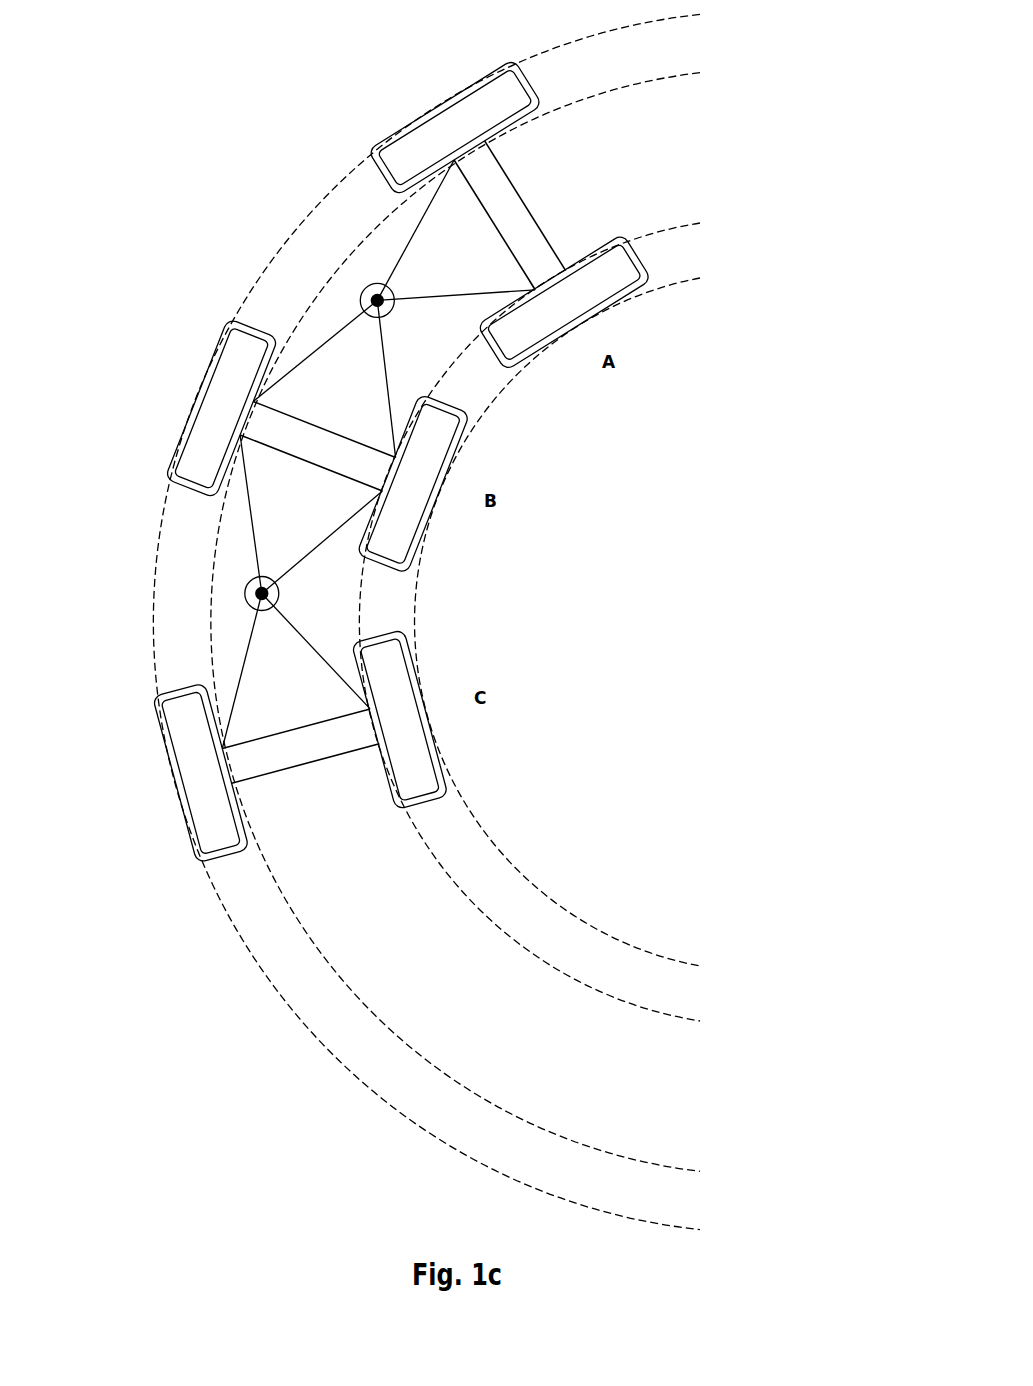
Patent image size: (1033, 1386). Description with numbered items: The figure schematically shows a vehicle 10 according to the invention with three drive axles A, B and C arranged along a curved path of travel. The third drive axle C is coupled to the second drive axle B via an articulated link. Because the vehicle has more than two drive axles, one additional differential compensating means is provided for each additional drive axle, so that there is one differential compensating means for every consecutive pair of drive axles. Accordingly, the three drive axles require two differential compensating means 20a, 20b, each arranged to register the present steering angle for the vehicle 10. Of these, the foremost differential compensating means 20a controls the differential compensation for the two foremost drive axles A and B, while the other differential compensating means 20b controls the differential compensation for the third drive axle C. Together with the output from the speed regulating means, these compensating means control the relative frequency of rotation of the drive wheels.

The vehicle 10 is at (113, 236).
The foremost differential compensating means 20a is at (360, 297).
The additional differential compensating means 20b is at (245, 593).